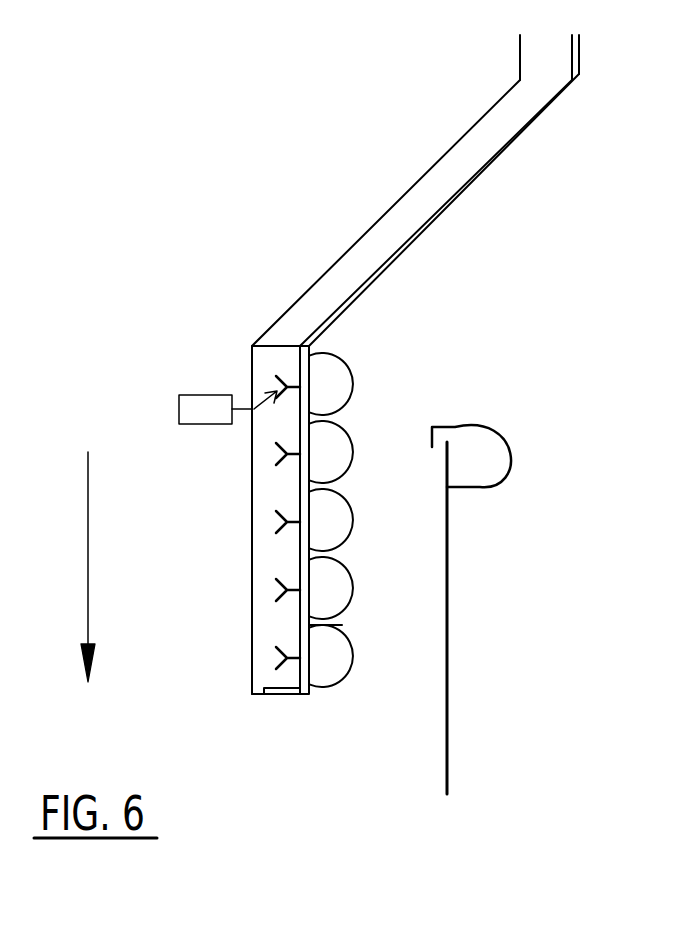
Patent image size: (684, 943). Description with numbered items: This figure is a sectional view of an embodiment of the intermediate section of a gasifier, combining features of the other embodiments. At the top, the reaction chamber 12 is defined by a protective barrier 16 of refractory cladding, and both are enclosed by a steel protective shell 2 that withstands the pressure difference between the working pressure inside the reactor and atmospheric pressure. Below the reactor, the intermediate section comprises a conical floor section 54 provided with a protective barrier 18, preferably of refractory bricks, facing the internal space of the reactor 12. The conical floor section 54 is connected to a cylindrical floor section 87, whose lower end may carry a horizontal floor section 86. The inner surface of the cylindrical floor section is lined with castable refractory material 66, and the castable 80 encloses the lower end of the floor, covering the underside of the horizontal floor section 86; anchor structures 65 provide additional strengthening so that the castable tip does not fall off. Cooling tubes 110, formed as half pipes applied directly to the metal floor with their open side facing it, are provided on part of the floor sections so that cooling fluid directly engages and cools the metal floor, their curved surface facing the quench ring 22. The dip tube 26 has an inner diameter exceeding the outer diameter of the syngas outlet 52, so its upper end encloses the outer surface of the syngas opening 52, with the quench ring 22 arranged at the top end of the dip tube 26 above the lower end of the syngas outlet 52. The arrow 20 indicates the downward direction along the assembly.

The protective shell 2 is at (577, 62).
The reaction chamber 12 is at (92, 139).
The protective barrier 16 is at (532, 57).
The protective barrier 18 is at (418, 197).
The direction of movement 20 is at (93, 540).
The quench ring 22 is at (535, 440).
The dip tube 26 is at (474, 695).
The syngas outlet 52 is at (210, 534).
The conical floor section 54 is at (460, 190).
The anchor structures 65 is at (228, 407).
The castable refractory material 66 is at (277, 622).
The castable 80 is at (268, 693).
The horizontal floor section 86 is at (298, 693).
The cylindrical floor section 87 is at (308, 623).
The cooling tubes 110 is at (330, 382).